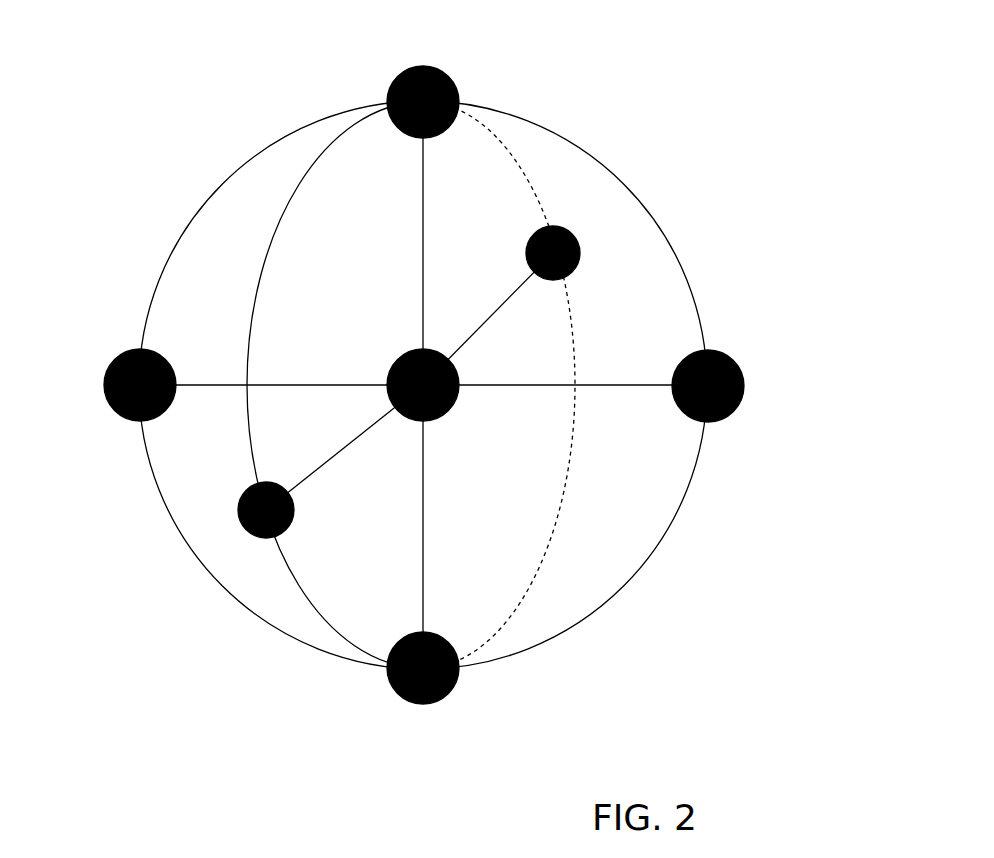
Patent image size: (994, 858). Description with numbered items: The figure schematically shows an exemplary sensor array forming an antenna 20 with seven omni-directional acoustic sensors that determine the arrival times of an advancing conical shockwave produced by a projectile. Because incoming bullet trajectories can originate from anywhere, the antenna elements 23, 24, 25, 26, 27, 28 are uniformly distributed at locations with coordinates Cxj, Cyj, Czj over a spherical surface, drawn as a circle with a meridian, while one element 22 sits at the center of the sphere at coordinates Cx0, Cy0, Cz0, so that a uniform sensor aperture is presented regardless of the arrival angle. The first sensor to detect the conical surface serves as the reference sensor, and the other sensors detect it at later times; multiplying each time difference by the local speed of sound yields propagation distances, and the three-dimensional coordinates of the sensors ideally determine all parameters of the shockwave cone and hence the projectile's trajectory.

The antenna 20 is at (640, 626).
The center antenna element 22 is at (452, 366).
The antenna element 23 is at (735, 408).
The antenna element 24 is at (445, 72).
The antenna element 25 is at (110, 361).
The antenna element 26 is at (389, 680).
The antenna element 27 is at (250, 532).
The antenna element 28 is at (580, 247).